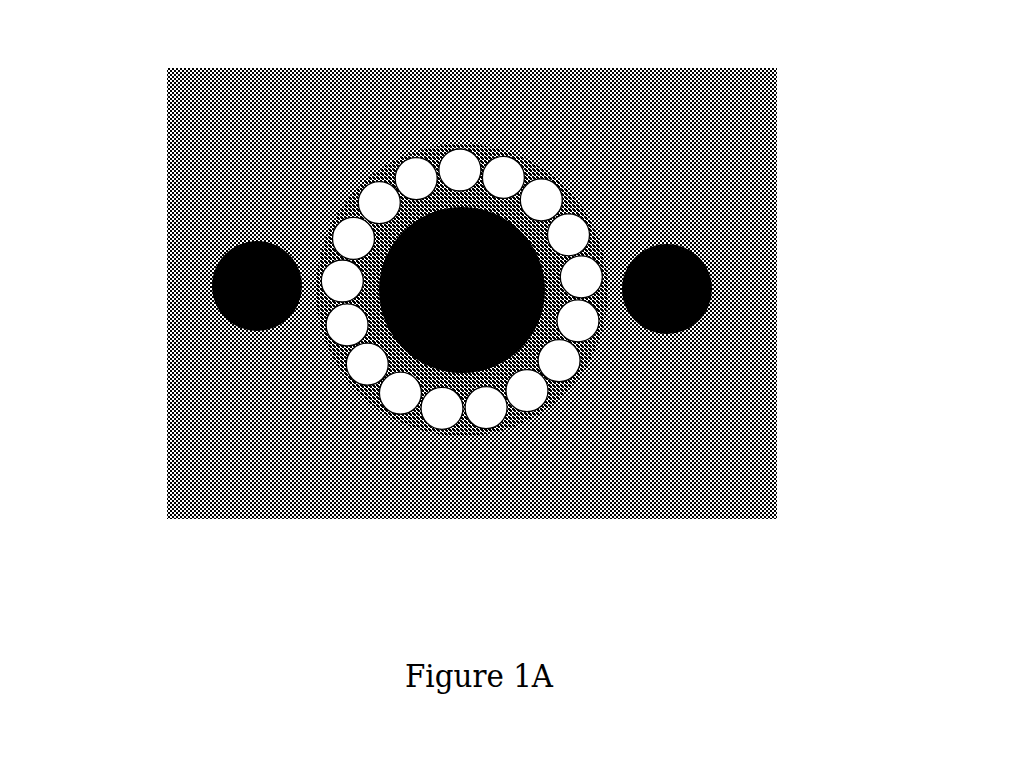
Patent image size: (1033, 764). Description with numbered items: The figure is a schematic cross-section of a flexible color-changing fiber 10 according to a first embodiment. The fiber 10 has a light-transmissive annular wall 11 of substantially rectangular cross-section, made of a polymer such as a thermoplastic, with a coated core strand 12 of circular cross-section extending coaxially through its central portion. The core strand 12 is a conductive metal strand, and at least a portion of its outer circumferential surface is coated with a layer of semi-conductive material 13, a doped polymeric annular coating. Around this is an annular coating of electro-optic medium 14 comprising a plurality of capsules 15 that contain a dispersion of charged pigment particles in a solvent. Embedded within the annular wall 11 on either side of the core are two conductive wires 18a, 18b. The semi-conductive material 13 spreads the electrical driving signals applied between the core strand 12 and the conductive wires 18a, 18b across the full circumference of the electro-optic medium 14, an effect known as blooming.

The color-changing fiber 10 is at (835, 70).
The annular wall 11 is at (588, 517).
The core strand 12 is at (540, 340).
The layer of semi-conductive material 13 is at (545, 220).
The electro-optic medium 14 is at (360, 393).
The capsules 15 is at (443, 152).
The conductive wire 18a is at (710, 282).
The conductive wire 18b is at (212, 270).